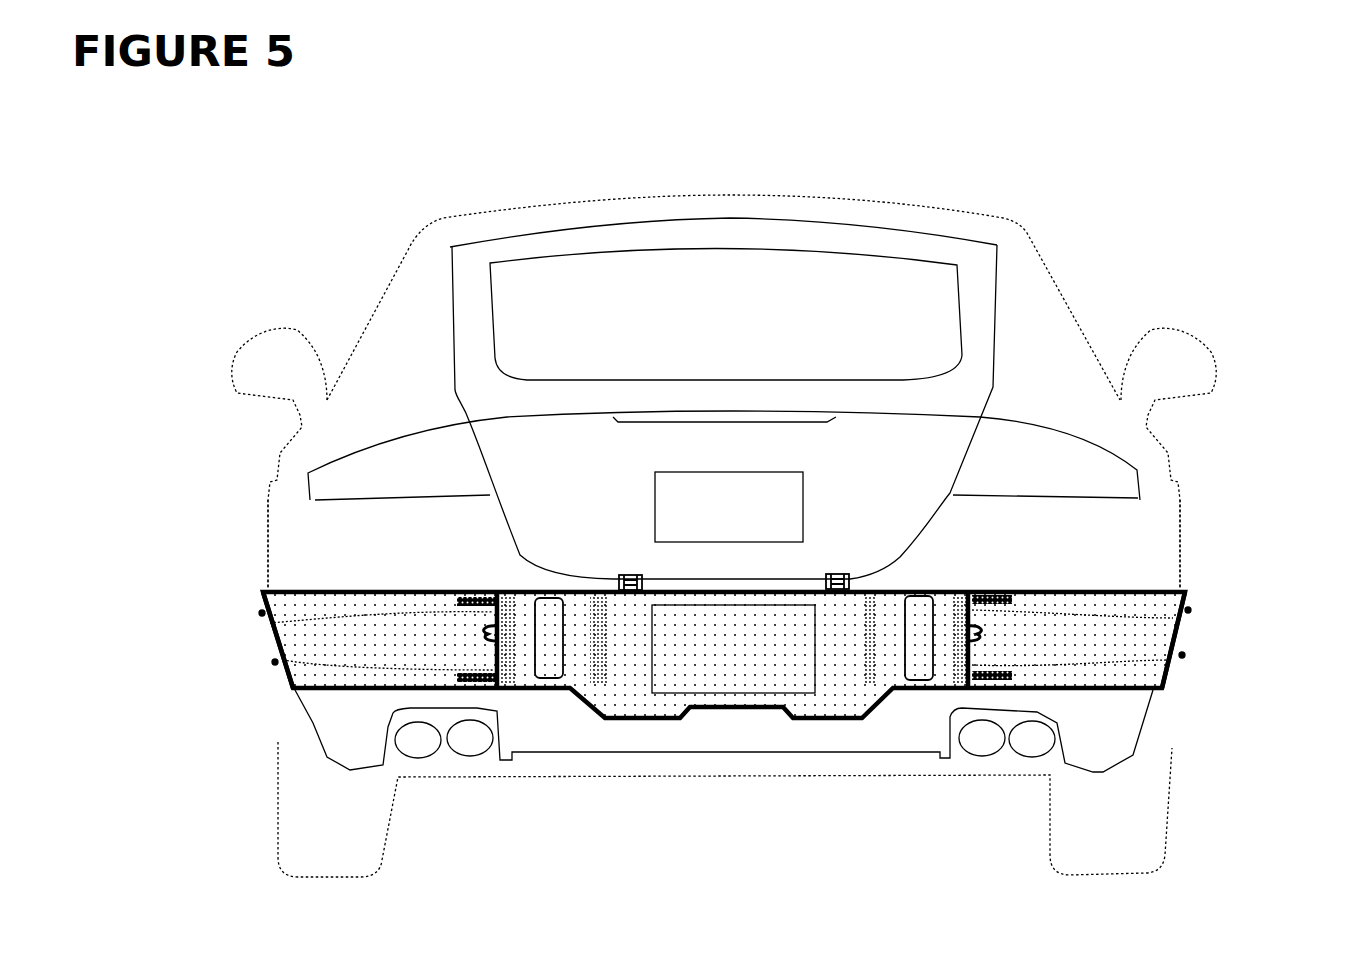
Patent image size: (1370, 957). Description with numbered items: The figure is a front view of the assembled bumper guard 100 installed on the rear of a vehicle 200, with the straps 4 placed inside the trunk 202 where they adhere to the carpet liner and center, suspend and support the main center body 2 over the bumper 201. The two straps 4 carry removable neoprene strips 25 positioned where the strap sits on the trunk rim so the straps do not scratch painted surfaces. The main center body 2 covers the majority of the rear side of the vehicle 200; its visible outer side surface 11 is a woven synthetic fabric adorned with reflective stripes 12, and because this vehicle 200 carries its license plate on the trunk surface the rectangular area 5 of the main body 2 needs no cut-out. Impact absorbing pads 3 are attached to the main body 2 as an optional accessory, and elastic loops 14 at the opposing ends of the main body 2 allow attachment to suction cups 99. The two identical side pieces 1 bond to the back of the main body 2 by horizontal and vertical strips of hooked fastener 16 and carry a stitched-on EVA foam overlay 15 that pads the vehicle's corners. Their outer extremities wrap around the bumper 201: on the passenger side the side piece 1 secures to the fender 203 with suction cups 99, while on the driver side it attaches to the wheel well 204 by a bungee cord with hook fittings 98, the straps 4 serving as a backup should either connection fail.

The vehicle 200 is at (732, 168).
The trunk 202 is at (517, 447).
The bumper 201 is at (727, 730).
The Adjustable Length Complete Coverage Bumper Guard 100 is at (717, 621).
The side piece 1 is at (404, 699).
The main center body 2 is at (727, 566).
The impact absorbing pad 3 is at (549, 694).
The strap 4 is at (628, 566).
The rectangular area/section 5 is at (730, 650).
The outer side surface 11 is at (625, 650).
The reflective stripe 12 is at (518, 625).
The elastic loop 14 is at (483, 633).
The EVA foam overlay 15 is at (347, 680).
The stitched on hooked Velcro strips 16 is at (468, 590).
The neoprene strip 25 is at (583, 655).
The bungee cord with hook fittings 98 is at (260, 613).
The suction cup 99 is at (1190, 610).
The fender 203 is at (1188, 633).
The wheel well 204 is at (282, 675).